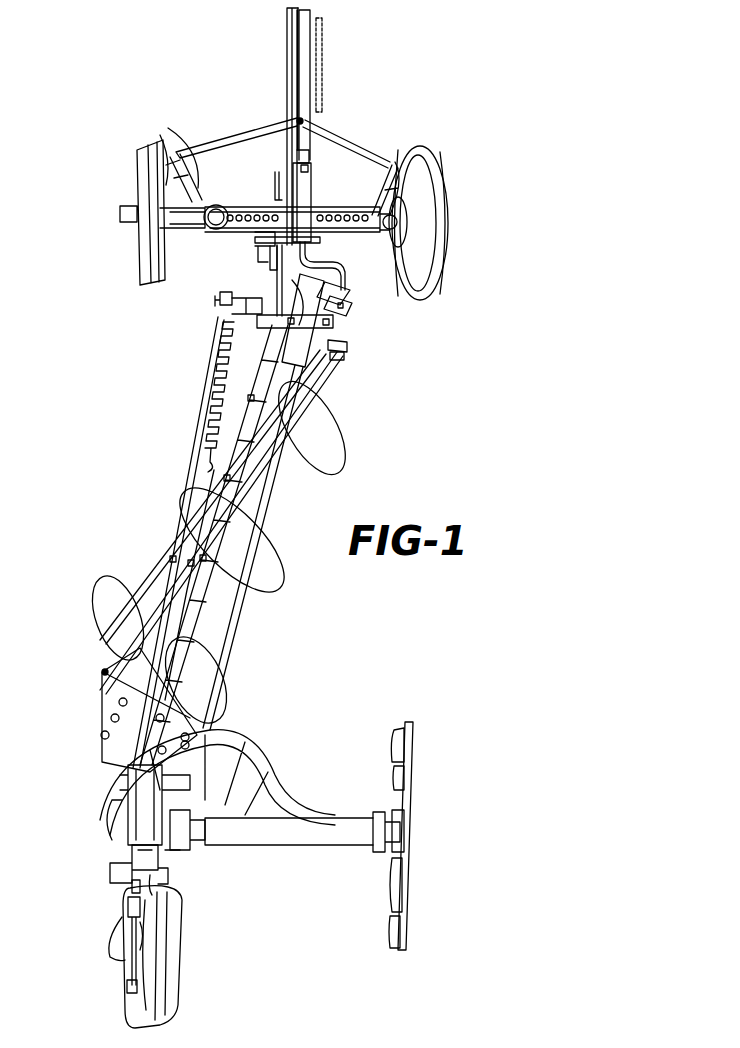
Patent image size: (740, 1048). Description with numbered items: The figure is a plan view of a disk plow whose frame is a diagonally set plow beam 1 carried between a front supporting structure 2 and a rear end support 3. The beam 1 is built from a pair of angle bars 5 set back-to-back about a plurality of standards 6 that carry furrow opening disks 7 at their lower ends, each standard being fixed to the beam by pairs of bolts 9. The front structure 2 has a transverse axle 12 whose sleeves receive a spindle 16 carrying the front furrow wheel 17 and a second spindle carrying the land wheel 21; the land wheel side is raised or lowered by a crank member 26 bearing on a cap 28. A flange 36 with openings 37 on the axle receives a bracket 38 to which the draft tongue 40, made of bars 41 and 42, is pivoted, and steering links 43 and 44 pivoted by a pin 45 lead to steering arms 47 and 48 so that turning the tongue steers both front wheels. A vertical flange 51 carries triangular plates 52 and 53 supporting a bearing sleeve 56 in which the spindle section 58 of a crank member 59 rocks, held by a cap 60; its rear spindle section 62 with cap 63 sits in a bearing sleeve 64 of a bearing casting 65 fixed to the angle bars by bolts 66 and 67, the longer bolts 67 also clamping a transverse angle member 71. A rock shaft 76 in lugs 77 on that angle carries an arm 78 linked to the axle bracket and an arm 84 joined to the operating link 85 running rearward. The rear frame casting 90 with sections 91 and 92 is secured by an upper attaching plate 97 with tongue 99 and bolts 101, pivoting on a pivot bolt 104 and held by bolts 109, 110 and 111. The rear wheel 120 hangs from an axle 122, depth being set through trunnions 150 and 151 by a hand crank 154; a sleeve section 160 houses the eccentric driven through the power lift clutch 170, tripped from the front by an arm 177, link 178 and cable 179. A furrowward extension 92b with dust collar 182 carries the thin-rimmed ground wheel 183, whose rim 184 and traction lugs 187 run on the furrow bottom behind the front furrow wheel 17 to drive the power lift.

The plow beam 1 is at (135, 552).
The front supporting structure 2 is at (208, 117).
The rear end support 3 is at (62, 766).
The angle bars 5 is at (262, 458).
The standards 6 is at (190, 535).
The furrow opening disks 7 is at (330, 418).
The bolts 9 is at (128, 650).
The transverse axle 12 is at (265, 194).
The spindle 16 is at (387, 229).
The front furrow wheel 17 is at (445, 190).
The land wheel 21 is at (137, 163).
The crank member 26 is at (190, 233).
The cap 28 is at (218, 226).
The flange 36 is at (232, 212).
The openings 37 is at (178, 138).
The bracket 38 is at (275, 190).
The draft tongue 40 is at (284, 82).
The bar 41 is at (287, 26).
The bar 42 is at (297, 43).
The steering link 43 is at (352, 144).
The steering link 44 is at (261, 130).
The pin 45 is at (304, 121).
The steering arm 47 is at (378, 200).
The steering arm 48 is at (200, 148).
The vertical flange 51 is at (350, 233).
The triangular plate 52 is at (260, 250).
The triangular plate 53 is at (272, 258).
The bearing sleeve 56 is at (311, 196).
The spindle section 58 is at (309, 154).
The crank member 59 is at (355, 264).
The cap 60 is at (310, 168).
The spindle section 62 is at (342, 360).
The cap 63 is at (347, 347).
The bearing sleeve 64 is at (350, 288).
The bearing casting 65 is at (365, 318).
The bolts 66 is at (352, 300).
The bolts 67 is at (288, 322).
The transverse angle member 71 is at (315, 340).
The rock shaft 76 is at (247, 294).
The lugs 77 is at (262, 312).
The arm 78 is at (277, 272).
The arm 84 is at (215, 300).
The operating link 85 is at (205, 408).
The rear frame casting 90 is at (265, 772).
The section 91 is at (110, 834).
The section 92 is at (243, 838).
The furrowward extension 92b is at (350, 830).
The upper attaching plate 97 is at (118, 703).
The tongue 99 is at (104, 674).
The bolts 101 is at (102, 734).
The pivot bolt 104 is at (133, 758).
The bolt 109 is at (160, 716).
The bolt 110 is at (162, 748).
The bolt 111 is at (200, 722).
The rear wheel 120 is at (168, 992).
The axle 122 is at (118, 925).
The trunnion 150 is at (140, 796).
The trunnion 151 is at (135, 862).
The hand crank 154 is at (127, 988).
The sleeve section 160 is at (158, 860).
The power lift clutch 170 is at (202, 848).
The arm 177 is at (170, 852).
The link 178 is at (224, 612).
The cable 179 is at (322, 55).
The dust collar 182 is at (378, 850).
The ground wheel 183 is at (420, 746).
The rim 184 is at (412, 800).
The lugs 187 is at (413, 770).